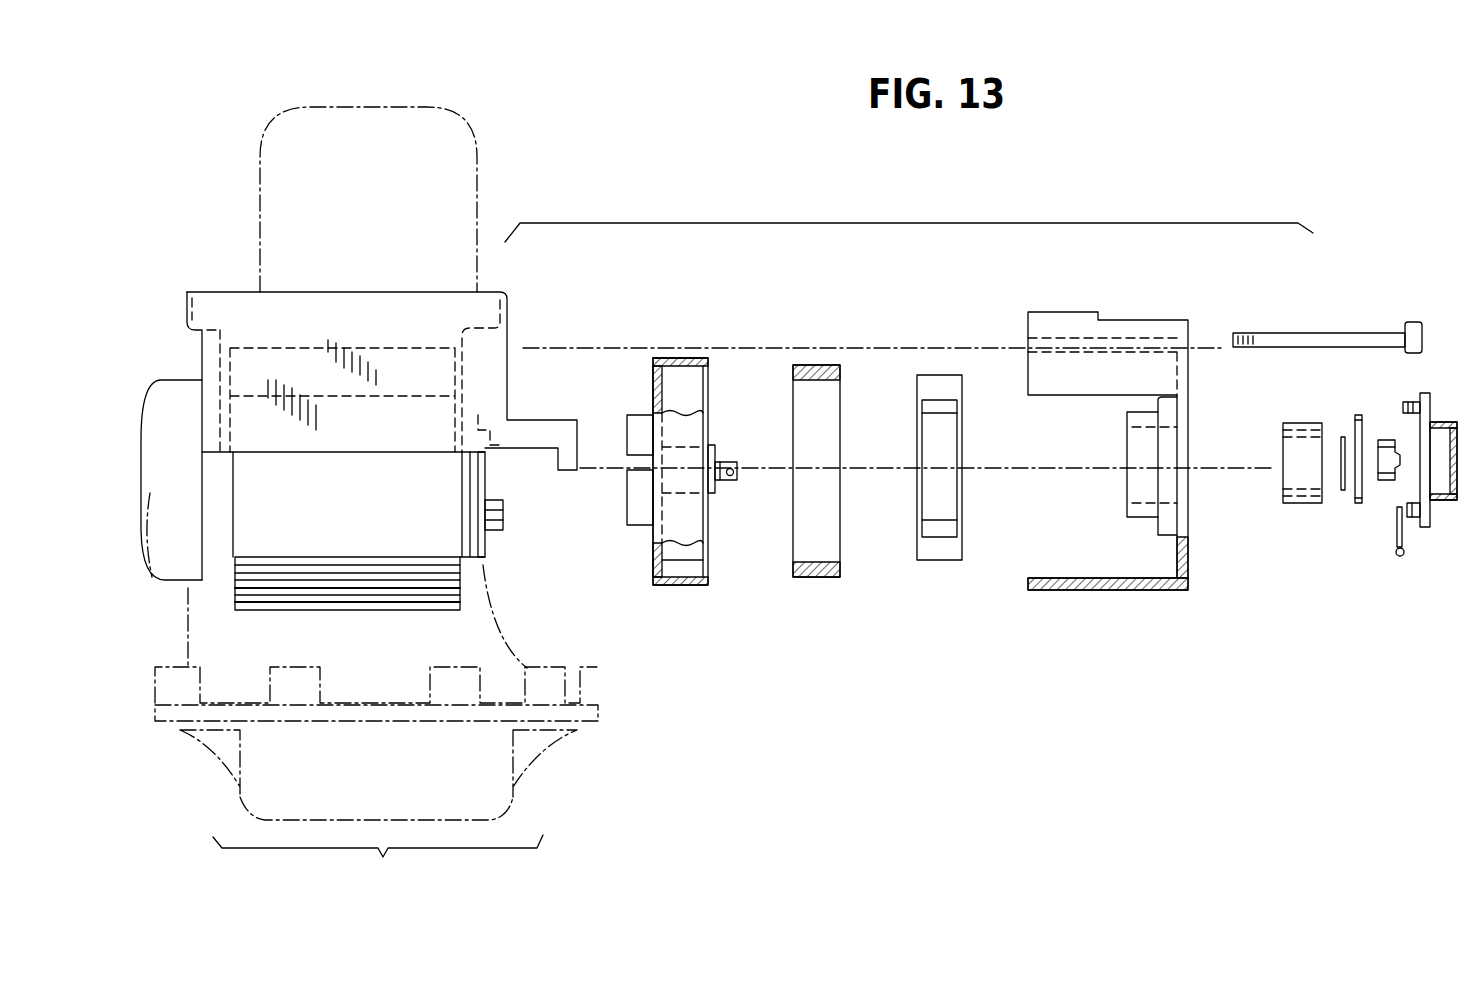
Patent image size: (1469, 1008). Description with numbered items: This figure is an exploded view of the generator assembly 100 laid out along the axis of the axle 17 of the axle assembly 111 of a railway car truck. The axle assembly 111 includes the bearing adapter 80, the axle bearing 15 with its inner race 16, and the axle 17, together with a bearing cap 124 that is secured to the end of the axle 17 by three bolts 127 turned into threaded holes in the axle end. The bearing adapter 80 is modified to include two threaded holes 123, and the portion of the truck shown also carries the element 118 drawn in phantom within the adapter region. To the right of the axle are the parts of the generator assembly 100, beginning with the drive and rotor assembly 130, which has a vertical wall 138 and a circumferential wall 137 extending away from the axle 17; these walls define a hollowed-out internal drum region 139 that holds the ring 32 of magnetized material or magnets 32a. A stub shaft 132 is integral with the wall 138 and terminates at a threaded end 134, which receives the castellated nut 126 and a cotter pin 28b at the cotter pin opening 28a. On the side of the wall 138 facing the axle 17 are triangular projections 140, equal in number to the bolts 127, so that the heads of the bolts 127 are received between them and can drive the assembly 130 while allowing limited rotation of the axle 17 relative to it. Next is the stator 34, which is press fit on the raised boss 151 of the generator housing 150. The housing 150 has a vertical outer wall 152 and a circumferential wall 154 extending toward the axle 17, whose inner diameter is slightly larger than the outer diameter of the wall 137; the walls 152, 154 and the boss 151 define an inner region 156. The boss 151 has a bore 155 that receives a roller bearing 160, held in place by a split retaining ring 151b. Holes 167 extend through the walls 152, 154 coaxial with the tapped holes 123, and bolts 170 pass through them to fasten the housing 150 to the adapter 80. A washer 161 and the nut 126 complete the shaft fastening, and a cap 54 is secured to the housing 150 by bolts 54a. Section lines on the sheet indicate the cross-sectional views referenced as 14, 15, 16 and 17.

The generator assembly 100 is at (875, 220).
The bearing adapter 80 is at (505, 312).
The stator windings 118 is at (405, 346).
The threaded holes 123 is at (464, 351).
The inner race 16 is at (595, 408).
The bolts 127 is at (505, 515).
The bearing cap 124 is at (485, 552).
The axle 17 is at (233, 560).
The axle bearing 15 is at (385, 607).
The axle assembly 111 is at (376, 780).
The drive and rotor assembly 130 is at (674, 589).
The circumferential wall 137 is at (682, 359).
The stub shaft 132 is at (700, 484).
The internal drum region 139 is at (690, 565).
The threaded end 134 is at (725, 481).
The cotter pin opening 28a is at (732, 464).
The projections 140 is at (627, 527).
The vertical wall 138 is at (653, 575).
The ring 32 is at (838, 579).
The magnets 32a is at (840, 563).
The stator 34 is at (930, 566).
The section line 14- 14 is at (1008, 283).
The generator housing 150 is at (1203, 570).
The circumferential wall 154 is at (1130, 336).
The vertical outer wall 152 is at (1189, 562).
The inner region 156 is at (1051, 561).
The bore 155 is at (1134, 478).
The raised boss 151 is at (1143, 519).
The holes 167 is at (1181, 342).
The bolts 170 is at (1279, 333).
The roller bearing 160 is at (1302, 505).
The washer 161 is at (1343, 436).
The split retaining ring 151b is at (1358, 414).
The castellated nut 126 is at (1387, 439).
The cap 54 is at (1455, 500).
The bolts 54a is at (1446, 380).
The cotter pin 28b is at (1397, 515).